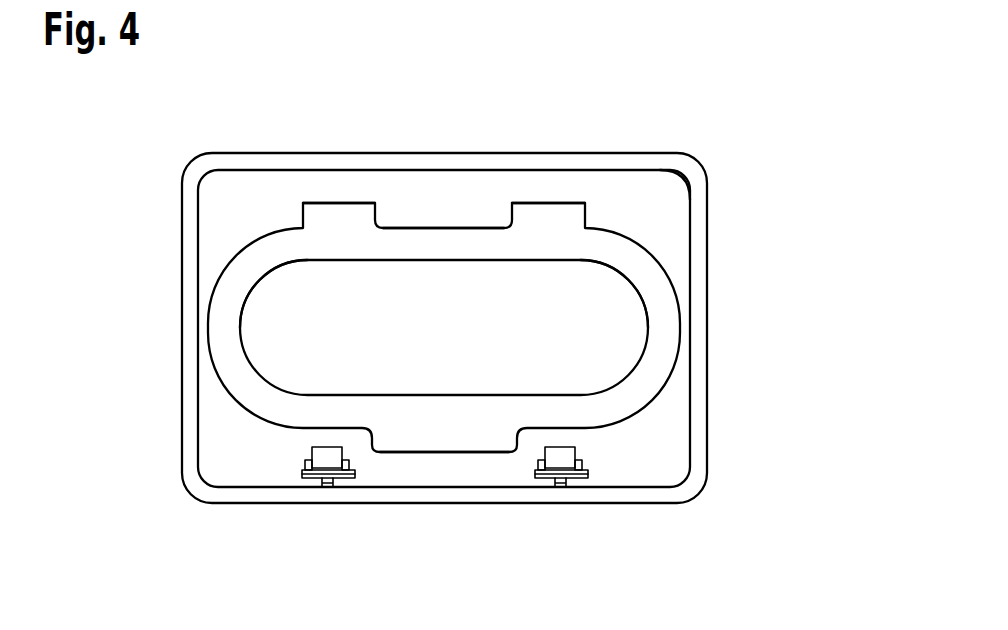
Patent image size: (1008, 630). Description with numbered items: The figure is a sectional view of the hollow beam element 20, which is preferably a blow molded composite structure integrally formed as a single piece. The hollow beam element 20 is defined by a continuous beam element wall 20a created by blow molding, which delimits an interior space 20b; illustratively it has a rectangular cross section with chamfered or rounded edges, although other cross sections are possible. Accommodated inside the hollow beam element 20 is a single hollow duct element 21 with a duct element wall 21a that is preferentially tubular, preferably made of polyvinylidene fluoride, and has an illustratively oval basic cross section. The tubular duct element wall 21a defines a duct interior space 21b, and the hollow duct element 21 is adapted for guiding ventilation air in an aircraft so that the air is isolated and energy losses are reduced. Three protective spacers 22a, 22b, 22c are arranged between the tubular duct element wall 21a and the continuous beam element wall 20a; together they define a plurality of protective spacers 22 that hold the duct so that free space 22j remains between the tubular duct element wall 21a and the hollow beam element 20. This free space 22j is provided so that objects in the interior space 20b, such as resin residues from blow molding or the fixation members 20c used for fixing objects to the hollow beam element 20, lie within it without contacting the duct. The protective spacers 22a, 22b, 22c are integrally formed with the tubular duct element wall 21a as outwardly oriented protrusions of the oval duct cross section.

The hollow beam element 20 is at (197, 178).
The continuous beam element wall 20a is at (686, 218).
The interior space 20b is at (267, 210).
The fixation members 20c is at (323, 452).
The hollow duct element 21 is at (240, 405).
The duct element wall 21a is at (656, 324).
The duct interior space 21b is at (305, 343).
The plurality of protective spacers 22 is at (606, 216).
The protective spacer 22a is at (340, 215).
The protective spacer 22b is at (545, 214).
The protective spacer 22c is at (449, 437).
The free space 22j is at (432, 197).